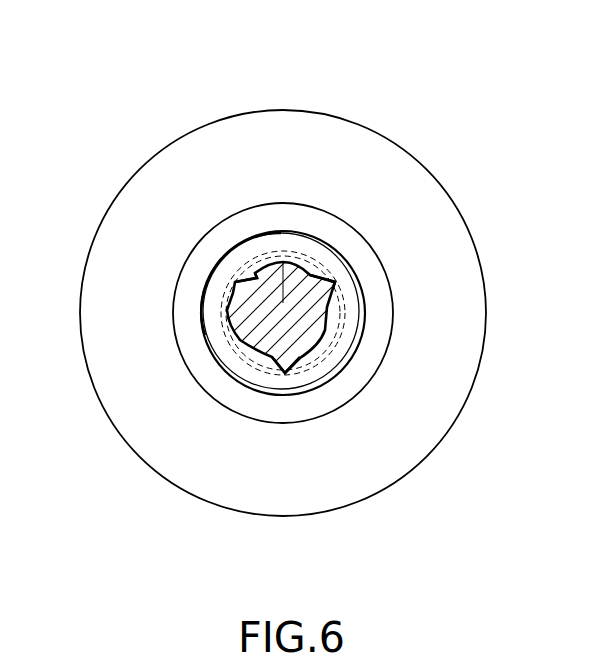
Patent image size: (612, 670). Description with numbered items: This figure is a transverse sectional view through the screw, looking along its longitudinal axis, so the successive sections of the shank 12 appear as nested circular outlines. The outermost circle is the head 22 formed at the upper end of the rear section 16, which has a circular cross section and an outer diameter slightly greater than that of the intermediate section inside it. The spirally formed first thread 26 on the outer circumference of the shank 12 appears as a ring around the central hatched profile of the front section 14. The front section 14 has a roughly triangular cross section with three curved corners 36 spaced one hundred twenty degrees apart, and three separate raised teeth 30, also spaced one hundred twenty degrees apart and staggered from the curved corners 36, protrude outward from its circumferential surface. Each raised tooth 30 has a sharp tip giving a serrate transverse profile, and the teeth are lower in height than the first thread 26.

The shank 12 is at (248, 255).
The front section 14 is at (286, 262).
The rear section 16 is at (322, 247).
The head 22 is at (470, 320).
The first thread 26 is at (213, 340).
The raised teeth 30 is at (335, 283).
The curved corners 36 is at (283, 303).